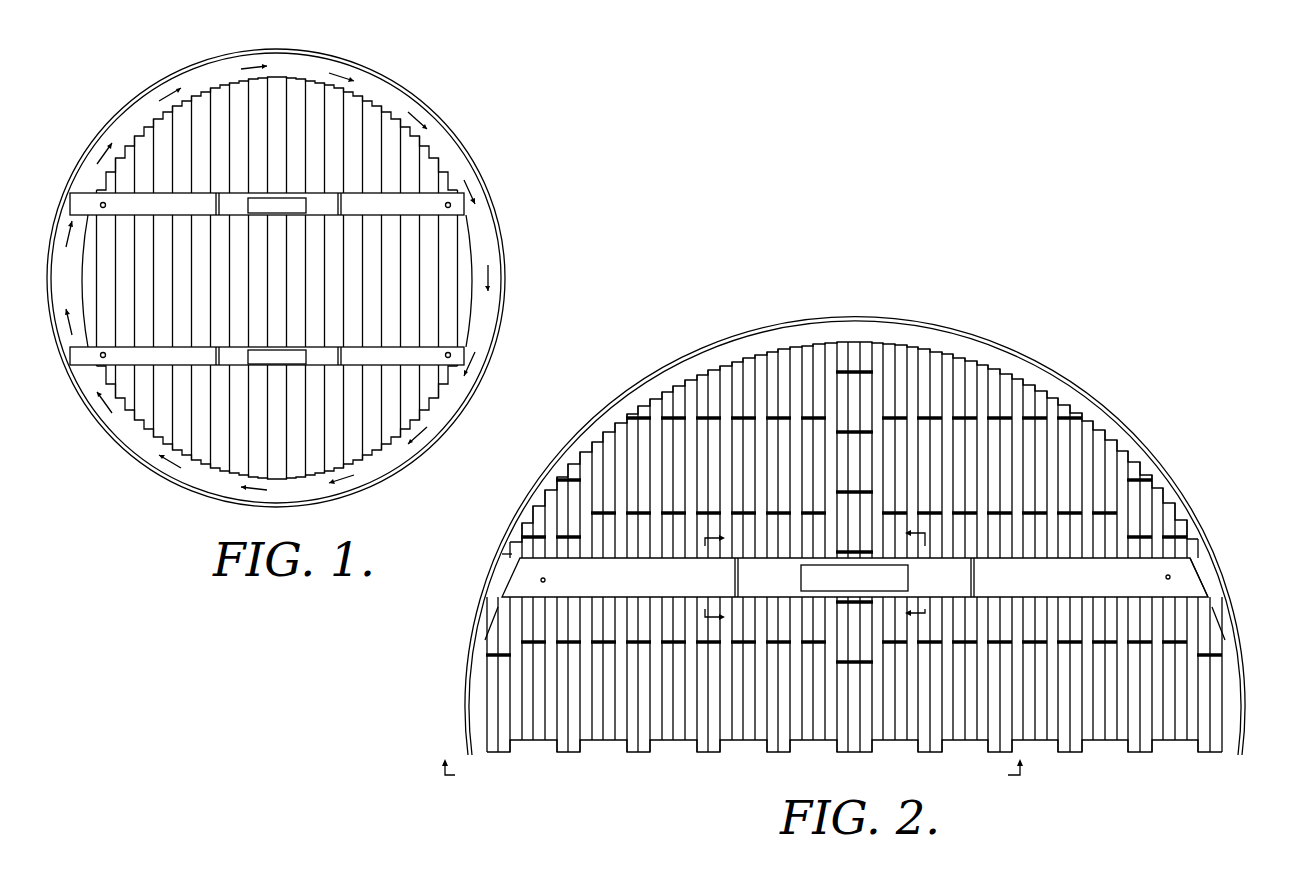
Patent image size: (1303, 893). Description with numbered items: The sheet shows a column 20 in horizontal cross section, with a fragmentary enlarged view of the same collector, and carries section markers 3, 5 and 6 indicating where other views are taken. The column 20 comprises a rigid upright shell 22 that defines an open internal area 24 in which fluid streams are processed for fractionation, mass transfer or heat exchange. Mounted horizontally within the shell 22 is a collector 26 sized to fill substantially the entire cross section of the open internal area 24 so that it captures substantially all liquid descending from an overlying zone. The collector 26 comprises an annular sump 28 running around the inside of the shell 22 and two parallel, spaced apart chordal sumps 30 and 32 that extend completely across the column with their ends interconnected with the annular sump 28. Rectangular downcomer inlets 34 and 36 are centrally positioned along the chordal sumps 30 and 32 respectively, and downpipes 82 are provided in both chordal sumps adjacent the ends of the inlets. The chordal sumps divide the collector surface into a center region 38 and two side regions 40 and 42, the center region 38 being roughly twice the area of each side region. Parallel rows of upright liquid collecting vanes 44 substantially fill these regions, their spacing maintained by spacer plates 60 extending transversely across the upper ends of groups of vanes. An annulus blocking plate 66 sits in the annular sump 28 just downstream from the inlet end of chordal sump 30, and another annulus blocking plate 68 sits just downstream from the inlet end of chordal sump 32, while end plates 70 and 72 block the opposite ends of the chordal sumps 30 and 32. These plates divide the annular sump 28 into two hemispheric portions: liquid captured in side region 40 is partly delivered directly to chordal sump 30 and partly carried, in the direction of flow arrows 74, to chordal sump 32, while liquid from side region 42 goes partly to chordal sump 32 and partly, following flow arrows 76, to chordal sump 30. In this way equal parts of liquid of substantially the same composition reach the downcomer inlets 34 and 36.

In FIG. 1, the column 20 is at (465, 438).
In FIG. 2, the column 20 is at (1182, 480).
In FIG. 1, the shell 22 is at (398, 462).
In FIG. 2, the shell 22 is at (1198, 518).
In FIG. 1, the open internal area 24 is at (440, 133).
In FIG. 1, the collector 26 is at (405, 98).
In FIG. 2, the collector 26 is at (1107, 753).
In FIG. 1, the annular sump 28 is at (498, 242).
In FIG. 2, the annular sump 28 is at (1205, 565).
In FIG. 1, the chordal sump 30 is at (448, 197).
In FIG. 2, the chordal sump 30 is at (1200, 592).
In FIG. 1, the chordal sump 32 is at (455, 354).
In FIG. 1, the downcomer inlet 34 is at (270, 198).
In FIG. 2, the downcomer inlet 34 is at (894, 586).
In FIG. 1, the downcomer inlet 36 is at (270, 362).
In FIG. 1, the center region 38 is at (109, 324).
In FIG. 2, the center region 38 is at (678, 752).
In FIG. 1, the side region 40 is at (196, 117).
In FIG. 2, the side region 40 is at (1103, 450).
In FIG. 1, the side region 42 is at (199, 446).
In FIG. 2, the liquid collecting vanes 44 is at (1003, 383).
In FIG. 2, the spacer plates 60 is at (1043, 418).
In FIG. 1, the annulus blocking plate 66 is at (480, 358).
In FIG. 1, the annulus blocking plate 68 is at (88, 188).
In FIG. 2, the annulus blocking plate 68 is at (502, 554).
In FIG. 1, the end plate 70 is at (90, 425).
In FIG. 1, the end plate 72 is at (490, 208).
In FIG. 2, the end plate 72 is at (1208, 584).
In FIG. 1, the flow arrows 74 is at (322, 70).
In FIG. 1, the flow arrows 76 is at (192, 492).
In FIG. 2, the downpipes 82 is at (545, 580).
In FIG. 2, the section line 3- 3 is at (736, 779).
In FIG. 2, the section line 5- 5 is at (704, 580).
In FIG. 2, the section line 6- 6 is at (927, 580).